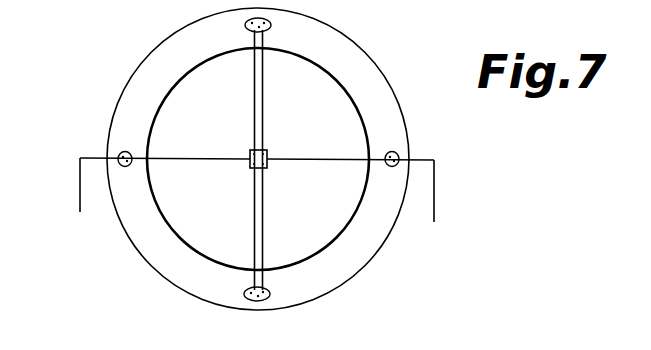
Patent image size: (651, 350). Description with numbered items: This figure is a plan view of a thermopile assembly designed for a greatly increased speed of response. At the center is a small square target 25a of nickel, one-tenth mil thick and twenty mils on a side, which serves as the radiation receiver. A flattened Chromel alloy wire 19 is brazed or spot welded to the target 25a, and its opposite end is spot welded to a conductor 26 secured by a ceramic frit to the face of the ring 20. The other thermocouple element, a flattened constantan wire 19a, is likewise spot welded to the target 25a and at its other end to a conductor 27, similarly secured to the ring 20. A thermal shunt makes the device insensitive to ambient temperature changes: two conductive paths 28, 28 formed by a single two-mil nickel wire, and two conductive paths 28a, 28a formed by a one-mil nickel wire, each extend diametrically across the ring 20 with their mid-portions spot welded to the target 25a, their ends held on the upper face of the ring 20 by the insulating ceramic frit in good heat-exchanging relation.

The ring 20 is at (360, 68).
The conductive paths 28 is at (253, 113).
The conductive paths 28a is at (264, 99).
The target 25a is at (268, 152).
The wire 19 is at (214, 160).
The wire 19a is at (316, 161).
The conductor 26 is at (78, 192).
The conductor 27 is at (436, 197).